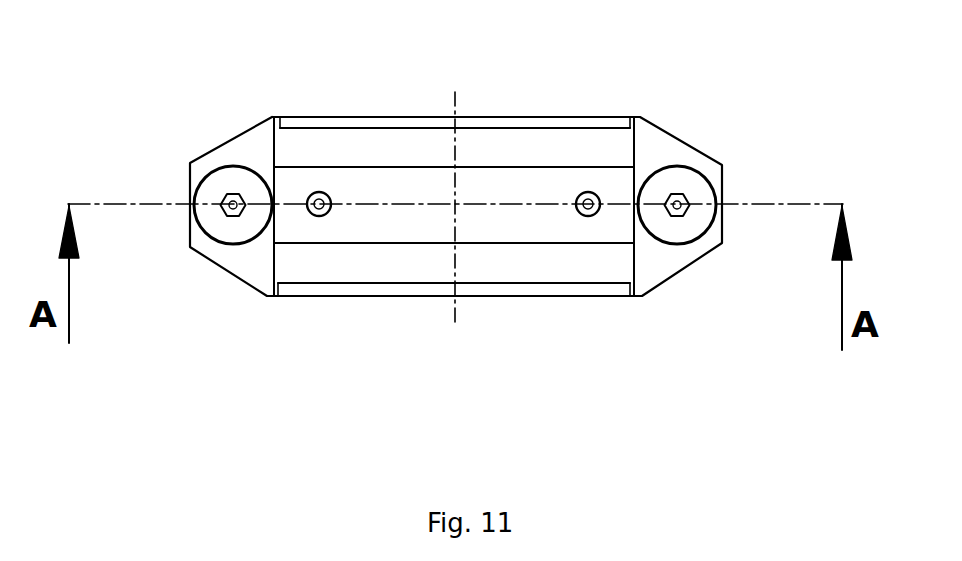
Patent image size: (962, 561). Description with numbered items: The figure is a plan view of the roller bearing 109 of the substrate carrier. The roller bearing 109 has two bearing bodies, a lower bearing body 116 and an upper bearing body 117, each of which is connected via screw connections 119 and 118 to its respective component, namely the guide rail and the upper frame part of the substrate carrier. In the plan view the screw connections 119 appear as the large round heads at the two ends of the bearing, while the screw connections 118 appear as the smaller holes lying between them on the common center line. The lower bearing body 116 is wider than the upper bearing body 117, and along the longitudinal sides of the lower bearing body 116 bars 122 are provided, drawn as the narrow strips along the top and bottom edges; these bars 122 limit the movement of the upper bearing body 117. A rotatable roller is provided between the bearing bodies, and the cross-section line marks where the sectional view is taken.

The roller bearing 109 is at (677, 116).
The lower bearing body 116 is at (385, 145).
The upper bearing body 117 is at (525, 185).
The screw connections 118 is at (319, 160).
The screw connections 119 is at (232, 165).
The bars 122 is at (323, 116).